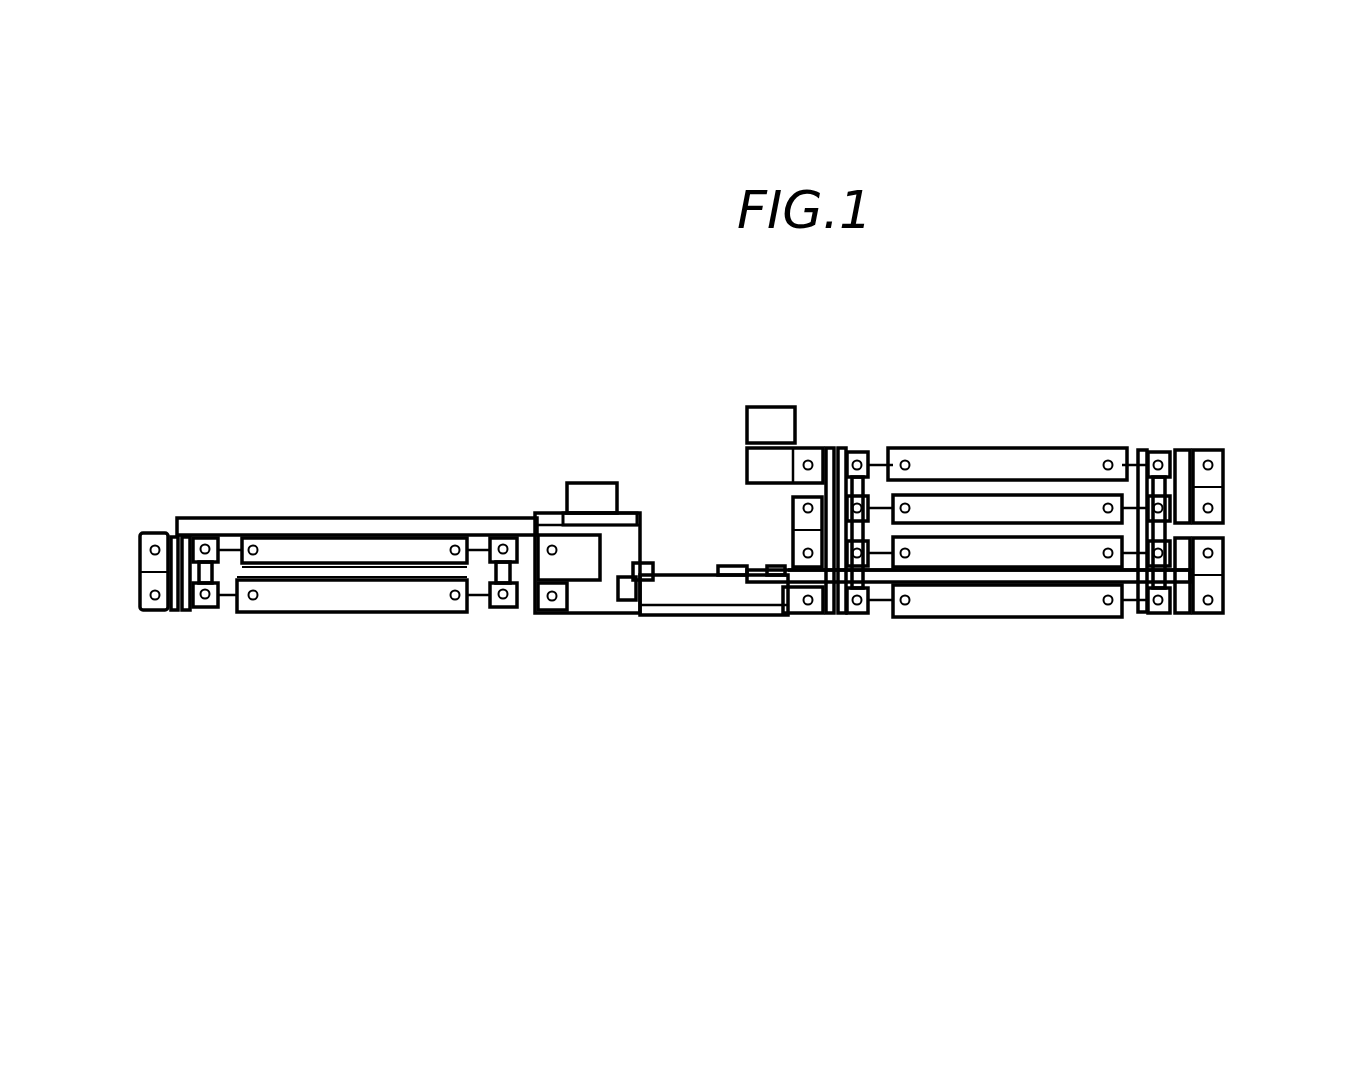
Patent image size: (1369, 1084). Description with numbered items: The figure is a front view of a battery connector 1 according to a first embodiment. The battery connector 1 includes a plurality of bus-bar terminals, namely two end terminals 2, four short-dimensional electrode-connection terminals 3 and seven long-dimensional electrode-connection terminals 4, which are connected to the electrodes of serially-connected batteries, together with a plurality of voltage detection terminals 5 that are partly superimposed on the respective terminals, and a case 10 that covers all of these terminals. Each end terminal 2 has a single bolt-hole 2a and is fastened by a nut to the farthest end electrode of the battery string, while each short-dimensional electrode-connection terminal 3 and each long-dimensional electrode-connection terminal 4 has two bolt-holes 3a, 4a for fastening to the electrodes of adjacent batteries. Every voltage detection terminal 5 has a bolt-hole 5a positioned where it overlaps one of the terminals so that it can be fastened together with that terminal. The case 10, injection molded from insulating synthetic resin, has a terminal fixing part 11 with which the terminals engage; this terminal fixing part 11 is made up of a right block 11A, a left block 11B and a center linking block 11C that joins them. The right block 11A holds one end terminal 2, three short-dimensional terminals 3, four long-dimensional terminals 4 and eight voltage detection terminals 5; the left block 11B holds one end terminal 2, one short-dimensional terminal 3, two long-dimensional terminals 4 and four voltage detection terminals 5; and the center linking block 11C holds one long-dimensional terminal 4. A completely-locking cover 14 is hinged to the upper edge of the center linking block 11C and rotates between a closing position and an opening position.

The battery connector 1 is at (341, 396).
The end terminal 2 is at (548, 535).
The bolt-hole 2a is at (535, 530).
The short-dimensional electrode-connection terminal 3 is at (138, 570).
The bolt-hole 3a is at (148, 612).
The long-dimensional electrode-connection terminal 4 is at (392, 596).
The bolt-hole 4a is at (250, 540).
The voltage detection terminal 5 is at (213, 532).
The bolt-hole 5a is at (150, 532).
The case 10 is at (598, 476).
The terminal fixing part 11 is at (1080, 618).
The right block 11A is at (998, 634).
The left block 11B is at (337, 634).
The center linking block 11C is at (593, 617).
The completely-locking cover 14 is at (762, 616).